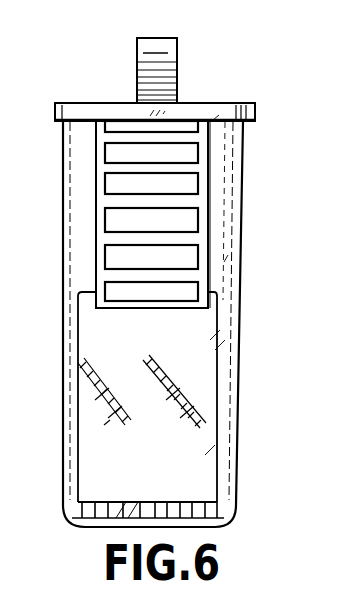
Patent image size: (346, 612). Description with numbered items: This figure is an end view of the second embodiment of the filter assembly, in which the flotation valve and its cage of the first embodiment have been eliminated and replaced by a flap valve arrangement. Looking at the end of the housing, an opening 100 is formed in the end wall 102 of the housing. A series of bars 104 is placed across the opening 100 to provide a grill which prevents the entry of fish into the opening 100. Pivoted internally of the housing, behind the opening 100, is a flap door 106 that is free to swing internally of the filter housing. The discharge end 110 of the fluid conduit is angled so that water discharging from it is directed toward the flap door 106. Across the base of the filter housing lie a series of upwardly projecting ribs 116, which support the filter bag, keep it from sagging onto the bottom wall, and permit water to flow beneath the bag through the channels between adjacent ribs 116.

The opening 100 is at (197, 178).
The end wall 102 is at (222, 192).
The bars 104 is at (150, 169).
The flap door 106 is at (202, 268).
The discharge end 110 is at (178, 60).
The ribs 116 is at (200, 508).